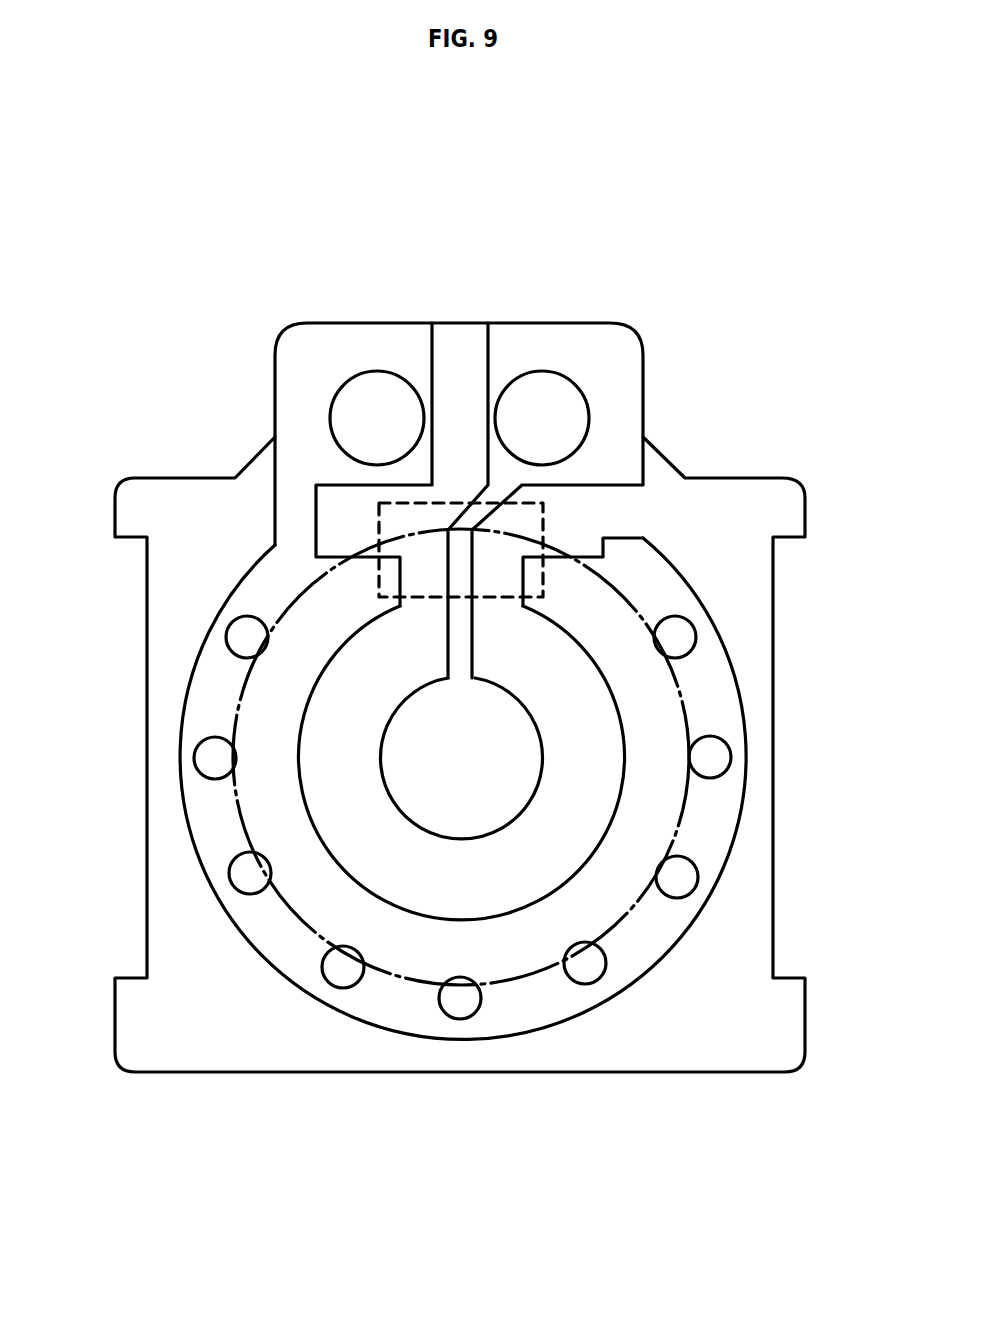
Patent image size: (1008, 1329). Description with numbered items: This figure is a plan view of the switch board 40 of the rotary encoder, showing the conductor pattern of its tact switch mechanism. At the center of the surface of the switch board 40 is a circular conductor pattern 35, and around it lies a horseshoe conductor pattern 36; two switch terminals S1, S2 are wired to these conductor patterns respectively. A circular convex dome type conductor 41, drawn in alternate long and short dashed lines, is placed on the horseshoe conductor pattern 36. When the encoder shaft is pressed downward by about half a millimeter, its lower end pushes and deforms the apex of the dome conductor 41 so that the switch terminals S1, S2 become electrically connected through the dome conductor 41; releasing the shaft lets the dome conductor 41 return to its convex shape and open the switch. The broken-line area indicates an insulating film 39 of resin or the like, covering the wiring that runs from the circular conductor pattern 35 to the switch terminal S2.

The switch terminal S1 is at (342, 337).
The switch terminal S2 is at (545, 343).
The switch board 40 is at (477, 448).
The insulating film 39 is at (543, 528).
The circular conductor pattern 35 is at (448, 753).
The horseshoe conductor pattern 36 is at (708, 798).
The dome conductor 41 is at (422, 982).